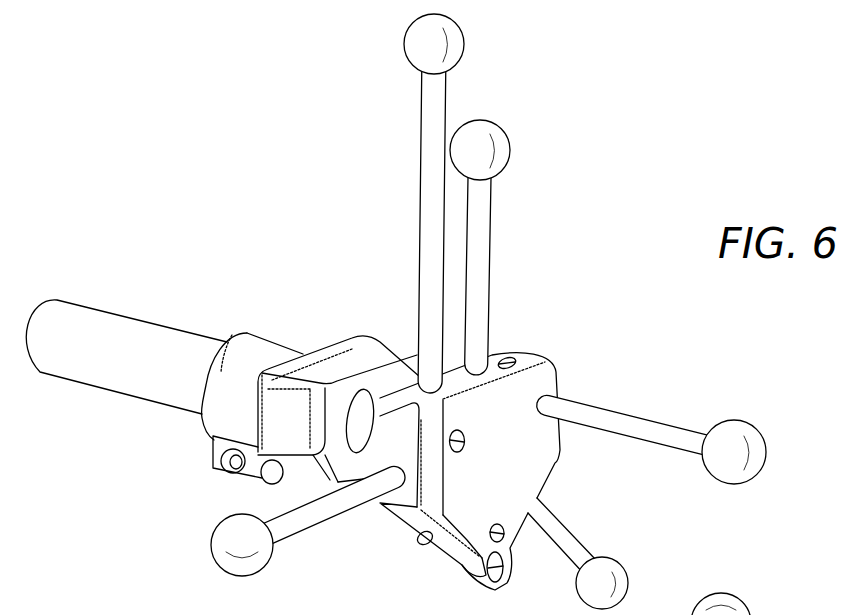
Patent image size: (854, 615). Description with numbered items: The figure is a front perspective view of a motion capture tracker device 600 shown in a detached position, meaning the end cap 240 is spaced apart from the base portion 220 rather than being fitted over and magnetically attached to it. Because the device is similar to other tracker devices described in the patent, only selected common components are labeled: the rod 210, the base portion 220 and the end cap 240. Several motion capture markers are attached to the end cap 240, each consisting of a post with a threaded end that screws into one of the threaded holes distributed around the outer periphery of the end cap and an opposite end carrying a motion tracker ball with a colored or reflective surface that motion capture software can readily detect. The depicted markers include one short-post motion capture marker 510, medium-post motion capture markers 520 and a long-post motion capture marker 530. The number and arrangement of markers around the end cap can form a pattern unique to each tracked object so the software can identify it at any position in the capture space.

The motion capture tracker device 600 is at (266, 150).
The rod 210 is at (134, 362).
The base portion 220 is at (318, 341).
The end cap 240 is at (555, 360).
The short-post motion capture marker 510 is at (620, 566).
The medium-post motion capture marker 520 is at (458, 50).
The long-post motion capture marker 530 is at (510, 143).